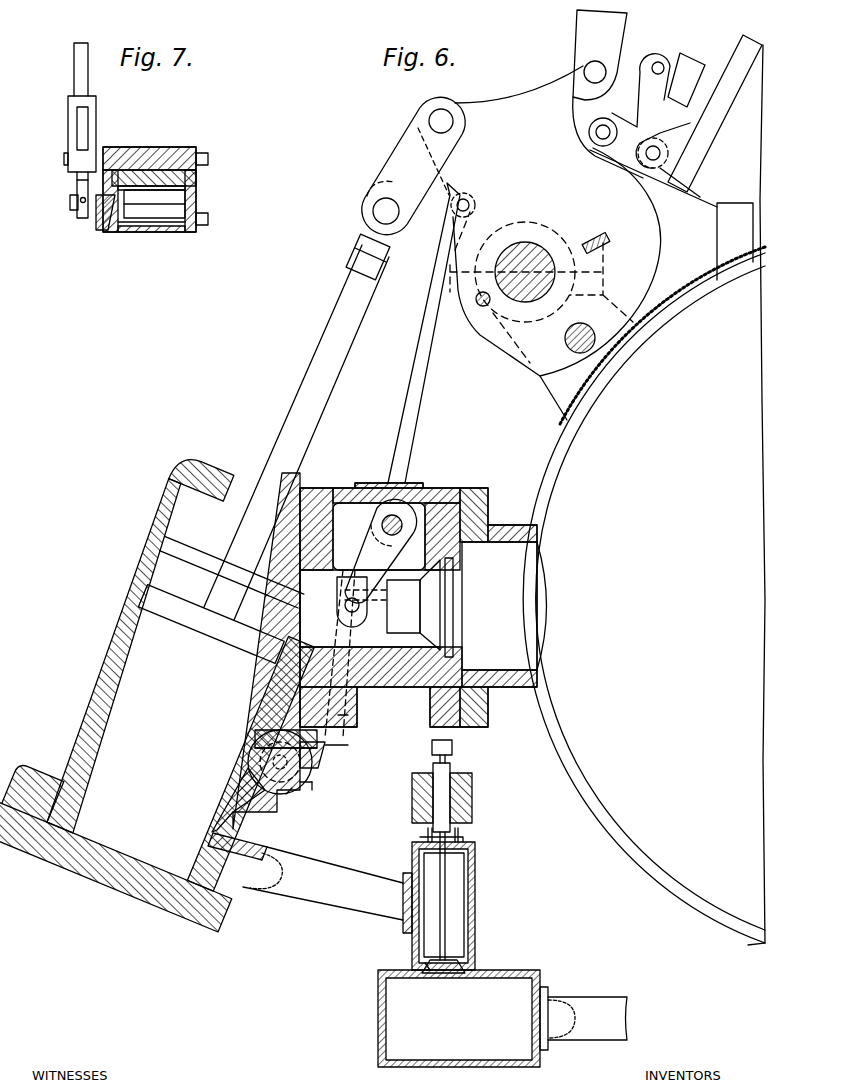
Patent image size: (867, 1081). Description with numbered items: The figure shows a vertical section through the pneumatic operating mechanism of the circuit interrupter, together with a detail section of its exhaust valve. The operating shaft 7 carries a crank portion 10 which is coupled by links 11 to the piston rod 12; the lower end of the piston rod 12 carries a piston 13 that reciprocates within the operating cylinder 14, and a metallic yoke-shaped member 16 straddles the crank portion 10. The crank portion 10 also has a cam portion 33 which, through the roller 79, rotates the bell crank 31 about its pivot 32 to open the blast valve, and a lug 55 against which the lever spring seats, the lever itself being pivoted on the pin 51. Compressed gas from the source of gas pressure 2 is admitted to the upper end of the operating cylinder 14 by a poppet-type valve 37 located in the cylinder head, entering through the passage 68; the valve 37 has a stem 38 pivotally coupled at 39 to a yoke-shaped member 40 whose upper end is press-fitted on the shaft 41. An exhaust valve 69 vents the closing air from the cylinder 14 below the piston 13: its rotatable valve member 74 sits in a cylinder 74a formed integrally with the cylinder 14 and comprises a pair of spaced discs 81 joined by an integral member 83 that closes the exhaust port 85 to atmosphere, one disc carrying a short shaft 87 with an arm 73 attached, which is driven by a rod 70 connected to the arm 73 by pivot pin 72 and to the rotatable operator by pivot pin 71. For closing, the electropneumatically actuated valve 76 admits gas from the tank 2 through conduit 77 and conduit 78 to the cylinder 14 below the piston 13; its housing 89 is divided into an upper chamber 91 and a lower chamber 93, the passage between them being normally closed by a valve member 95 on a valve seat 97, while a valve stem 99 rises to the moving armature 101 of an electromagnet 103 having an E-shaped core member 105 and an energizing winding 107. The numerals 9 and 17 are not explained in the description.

In FIG. 6, the source of gas pressure 2 is at (670, 897).
In FIG. 6, the operating shaft 7 is at (526, 248).
In FIG. 6, the hub 9 is at (520, 222).
In FIG. 6, the crank portion 10 is at (490, 106).
In FIG. 6, the links 11 is at (402, 150).
In FIG. 6, the piston rod 12 is at (320, 326).
In FIG. 6, the piston 13 is at (186, 625).
In FIG. 7, the operating cylinder 14 is at (135, 157).
In FIG. 6, the operating cylinder 14 is at (130, 603).
In FIG. 6, the yoke-shaped member 16 is at (622, 26).
In FIG. 6, the pivot pin 17 is at (584, 72).
In FIG. 6, the bell crank 31 is at (638, 110).
In FIG. 6, the pivot 32 is at (665, 158).
In FIG. 6, the cam portion 33 is at (660, 224).
In FIG. 6, the valve 37 is at (455, 572).
In FIG. 6, the stem 38 is at (388, 628).
In FIG. 6, the pivotal coupling 39 is at (345, 612).
In FIG. 6, the yoke-shaped member 40 is at (345, 582).
In FIG. 6, the shaft 41 is at (380, 522).
In FIG. 6, the pin 51 is at (565, 342).
In FIG. 6, the lug 55 is at (596, 236).
In FIG. 6, the passage 68 is at (298, 628).
In FIG. 7, the exhaust valve 69 is at (192, 256).
In FIG. 6, the exhaust valve 69 is at (224, 782).
In FIG. 7, the rod 70 is at (74, 70).
In FIG. 6, the rod 70 is at (408, 396).
In FIG. 6, the pivot pin 71 is at (473, 200).
In FIG. 7, the pivot pin 72 is at (64, 158).
In FIG. 6, the pivot pin 72 is at (346, 722).
In FIG. 7, the arm 73 is at (77, 186).
In FIG. 6, the arm 73 is at (340, 742).
In FIG. 7, the rotatable valve member 74 is at (200, 168).
In FIG. 6, the rotatable valve member 74 is at (257, 746).
In FIG. 7, the cylinder 74a is at (148, 226).
In FIG. 6, the cylinder 74a is at (312, 792).
In FIG. 6, the electropneumatically actuated valve 76 is at (528, 913).
In FIG. 6, the conduit 77 is at (606, 984).
In FIG. 6, the conduit 78 is at (340, 870).
In FIG. 6, the roller 79 is at (589, 128).
In FIG. 7, the spaced discs 81 is at (108, 230).
In FIG. 6, the spaced discs 81 is at (310, 785).
In FIG. 7, the integral member 83 is at (170, 165).
In FIG. 6, the integral member 83 is at (256, 735).
In FIG. 7, the exhaust port 85 is at (196, 198).
In FIG. 6, the exhaust port 85 is at (318, 762).
In FIG. 7, the short shaft 87 is at (70, 208).
In FIG. 6, the short shaft 87 is at (288, 794).
In FIG. 6, the housing 89 is at (475, 946).
In FIG. 6, the upper chamber 91 is at (460, 866).
In FIG. 6, the lower chamber 93 is at (470, 1050).
In FIG. 6, the valve member 95 is at (446, 975).
In FIG. 6, the valve seat 97 is at (430, 975).
In FIG. 6, the valve stem 99 is at (448, 897).
In FIG. 6, the moving armature 101 is at (452, 750).
In FIG. 6, the electromagnet 103 is at (510, 786).
In FIG. 6, the E-shaped core member 105 is at (433, 780).
In FIG. 6, the energizing winding 107 is at (472, 805).